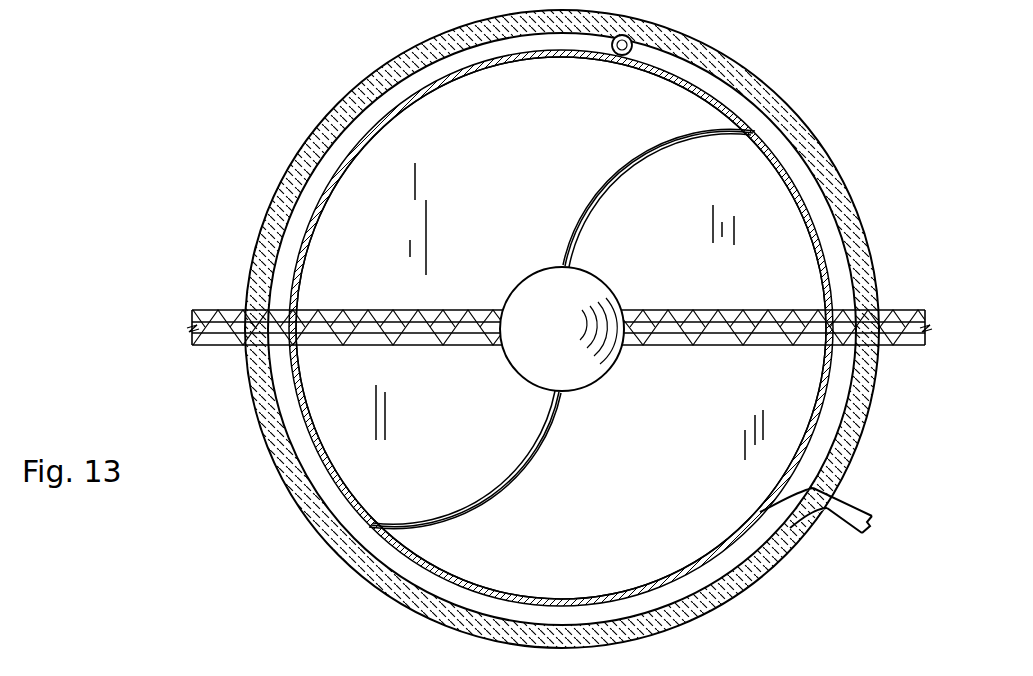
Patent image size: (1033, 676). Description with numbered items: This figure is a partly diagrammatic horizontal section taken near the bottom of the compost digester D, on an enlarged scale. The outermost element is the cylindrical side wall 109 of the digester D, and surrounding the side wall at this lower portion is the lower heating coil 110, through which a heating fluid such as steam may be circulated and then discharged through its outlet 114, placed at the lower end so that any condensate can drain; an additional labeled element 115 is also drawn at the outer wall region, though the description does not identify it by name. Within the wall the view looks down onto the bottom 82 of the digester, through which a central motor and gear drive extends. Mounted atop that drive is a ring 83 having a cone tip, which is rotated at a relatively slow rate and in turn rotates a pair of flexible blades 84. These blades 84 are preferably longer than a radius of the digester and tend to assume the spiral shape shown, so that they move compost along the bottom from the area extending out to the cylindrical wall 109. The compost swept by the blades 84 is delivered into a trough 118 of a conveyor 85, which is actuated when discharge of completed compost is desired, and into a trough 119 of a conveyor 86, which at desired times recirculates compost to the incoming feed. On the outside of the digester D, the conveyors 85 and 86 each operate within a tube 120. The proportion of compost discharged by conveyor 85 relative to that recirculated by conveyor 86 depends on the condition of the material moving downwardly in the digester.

The digester D is at (296, 151).
The outer drum wall 115 is at (733, 64).
The lower coil 110 is at (337, 158).
The side wall 109 is at (325, 226).
The tube 120 is at (229, 310).
The trough 119 is at (397, 310).
The trough 118 is at (745, 310).
The ring 83 is at (527, 275).
The flexible blades 84 is at (604, 191).
The conveyor 86 is at (396, 340).
The conveyor 85 is at (650, 340).
The bottom 82 is at (697, 447).
The outlet 114 is at (872, 492).